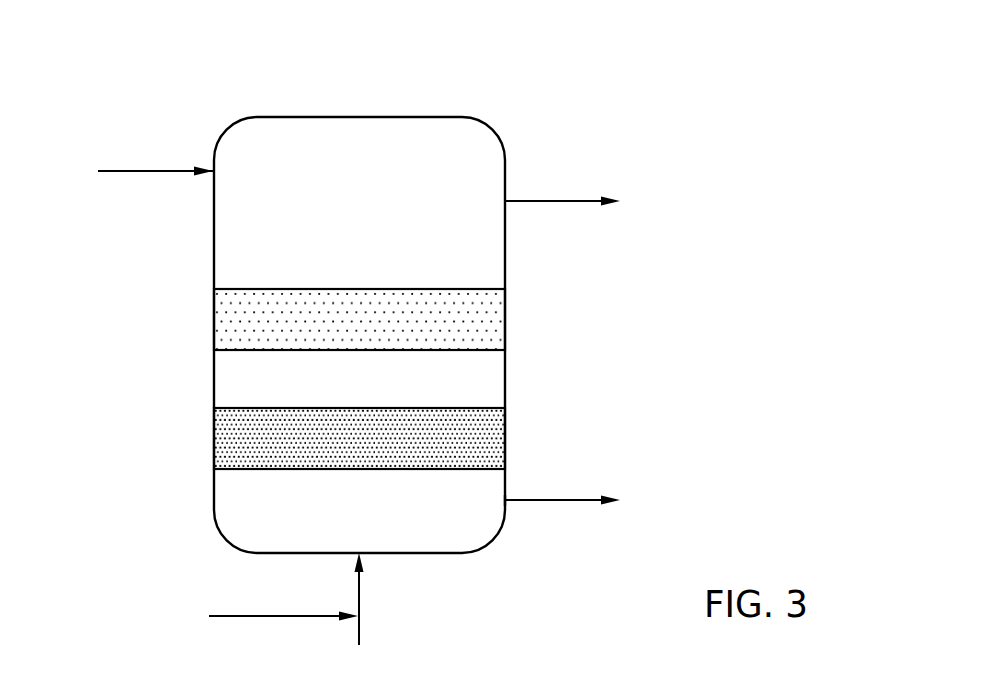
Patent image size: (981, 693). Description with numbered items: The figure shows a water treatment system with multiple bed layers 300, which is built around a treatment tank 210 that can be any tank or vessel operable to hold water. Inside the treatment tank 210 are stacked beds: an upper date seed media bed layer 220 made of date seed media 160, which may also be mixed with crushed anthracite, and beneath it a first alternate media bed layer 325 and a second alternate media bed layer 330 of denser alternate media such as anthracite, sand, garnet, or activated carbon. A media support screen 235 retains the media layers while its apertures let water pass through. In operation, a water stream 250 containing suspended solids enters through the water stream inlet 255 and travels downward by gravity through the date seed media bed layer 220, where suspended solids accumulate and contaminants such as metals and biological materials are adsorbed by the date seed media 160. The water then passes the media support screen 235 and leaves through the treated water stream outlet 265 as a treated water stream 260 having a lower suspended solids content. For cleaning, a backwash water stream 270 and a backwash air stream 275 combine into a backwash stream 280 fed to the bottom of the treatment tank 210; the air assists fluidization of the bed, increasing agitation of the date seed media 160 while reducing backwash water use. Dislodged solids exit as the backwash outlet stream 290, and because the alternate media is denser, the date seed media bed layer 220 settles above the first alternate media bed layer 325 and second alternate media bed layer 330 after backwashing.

The water treatment system with multiple bed layers 300 is at (672, 62).
The treatment tank 210 is at (330, 117).
The date seed media 160 is at (300, 302).
The date seed media bed layer 220 is at (315, 295).
The first alternate media bed layer 325 is at (213, 378).
The second alternate media bed layer 330 is at (213, 437).
The media support screen 235 is at (248, 470).
The water stream 250 is at (122, 171).
The water stream inlet 255 is at (212, 171).
The backwash outlet stream 290 is at (550, 201).
The treated water stream 260 is at (580, 500).
The treated water stream outlet 265 is at (507, 503).
The backwash air stream 275 is at (248, 616).
The backwash water stream 270 is at (359, 633).
The backwash stream 280 is at (359, 597).